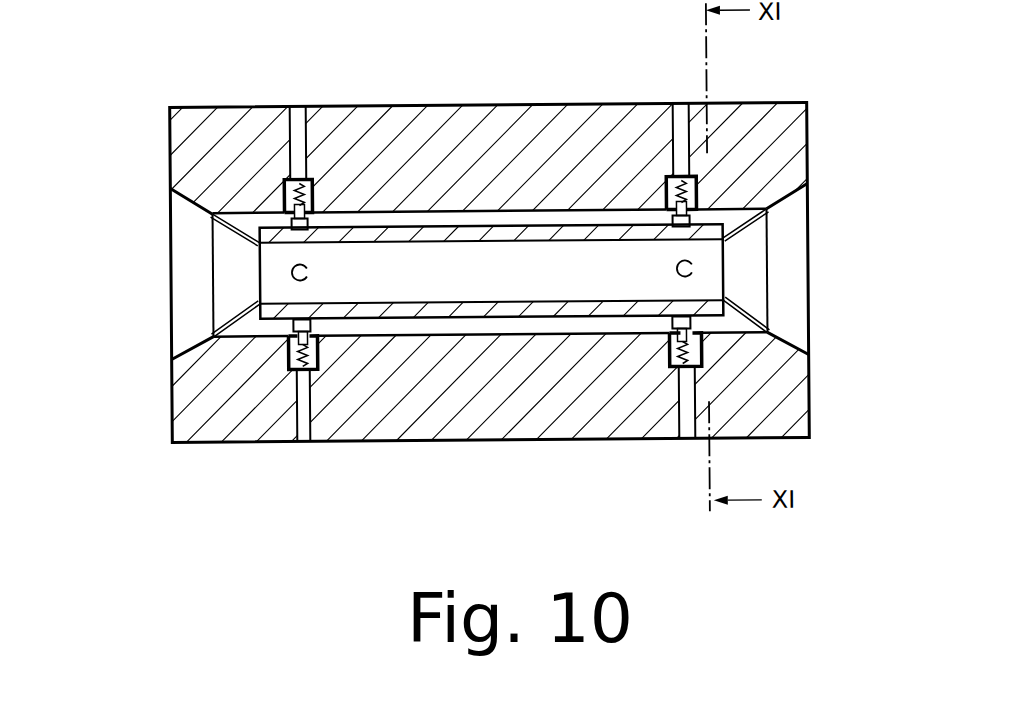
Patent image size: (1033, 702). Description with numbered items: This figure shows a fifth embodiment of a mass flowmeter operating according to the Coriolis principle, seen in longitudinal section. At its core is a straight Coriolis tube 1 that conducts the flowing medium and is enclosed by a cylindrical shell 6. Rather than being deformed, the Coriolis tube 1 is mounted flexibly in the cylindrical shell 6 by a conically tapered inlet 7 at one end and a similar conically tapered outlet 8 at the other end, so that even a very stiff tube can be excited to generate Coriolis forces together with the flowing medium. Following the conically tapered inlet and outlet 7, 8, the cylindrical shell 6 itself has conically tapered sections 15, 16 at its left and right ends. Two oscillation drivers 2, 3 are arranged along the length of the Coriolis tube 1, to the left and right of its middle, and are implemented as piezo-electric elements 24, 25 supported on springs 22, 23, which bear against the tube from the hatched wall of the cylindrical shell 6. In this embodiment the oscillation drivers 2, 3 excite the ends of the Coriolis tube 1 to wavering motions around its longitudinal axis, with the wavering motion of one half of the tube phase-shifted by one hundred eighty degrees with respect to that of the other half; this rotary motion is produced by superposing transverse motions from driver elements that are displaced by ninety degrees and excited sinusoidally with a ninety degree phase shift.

The Coriolis tube 1 is at (484, 237).
The oscillation driver 2 is at (329, 70).
The oscillation driver 3 is at (637, 72).
The cylindrical shell 6 is at (762, 149).
The conically tapered inlet 7 is at (213, 254).
The conically tapered outlet 8 is at (735, 316).
The conically tapered section 15 is at (198, 204).
The conically tapered section 16 is at (786, 200).
The spring 22 is at (298, 178).
The spring 23 is at (685, 178).
The piezo-electric element 24 is at (306, 323).
The piezo-electric element 25 is at (677, 324).